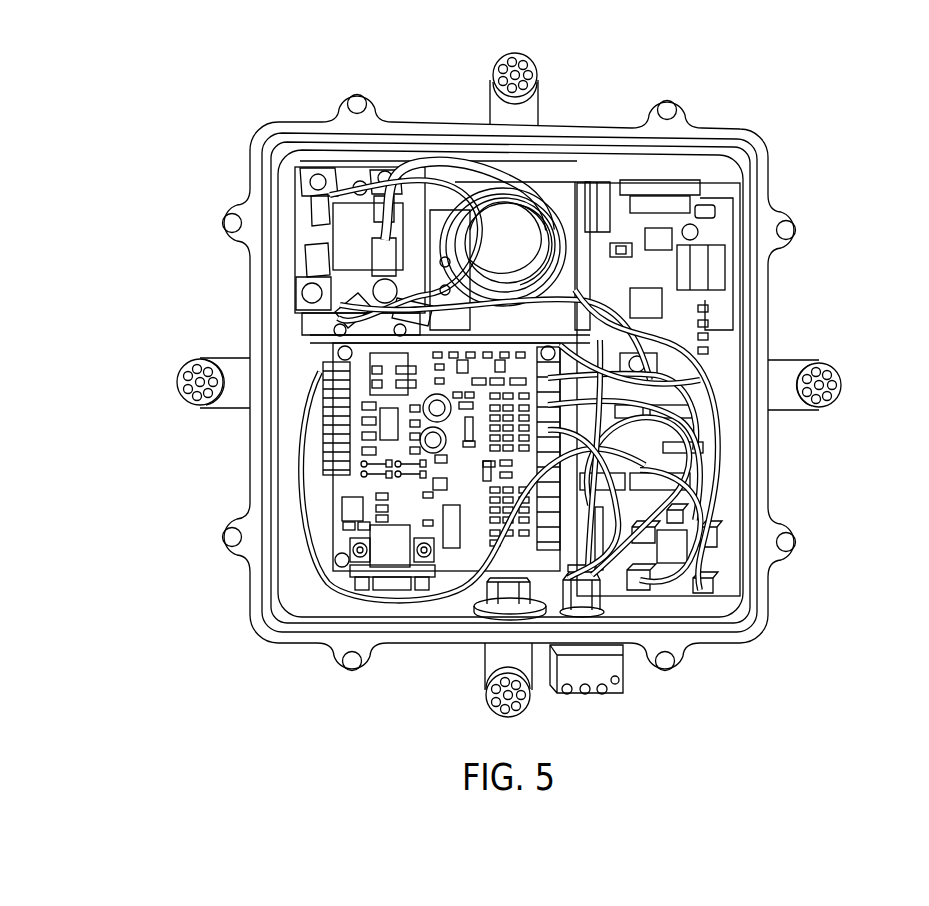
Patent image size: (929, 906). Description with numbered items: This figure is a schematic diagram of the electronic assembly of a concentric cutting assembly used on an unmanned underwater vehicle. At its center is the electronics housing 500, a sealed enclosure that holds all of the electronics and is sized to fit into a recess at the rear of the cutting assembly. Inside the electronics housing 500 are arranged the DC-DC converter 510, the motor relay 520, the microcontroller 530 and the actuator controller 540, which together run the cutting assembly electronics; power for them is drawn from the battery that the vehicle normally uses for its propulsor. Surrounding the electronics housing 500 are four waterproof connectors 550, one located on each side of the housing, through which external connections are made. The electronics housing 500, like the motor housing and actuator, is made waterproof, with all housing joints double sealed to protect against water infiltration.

The electronics housing 500 is at (770, 330).
The DC-DC converter 510 is at (503, 258).
The motor relay 520 is at (342, 238).
The microcontroller 530 is at (640, 452).
The actuator controller 540 is at (398, 494).
The waterproof connectors 550 is at (537, 66).